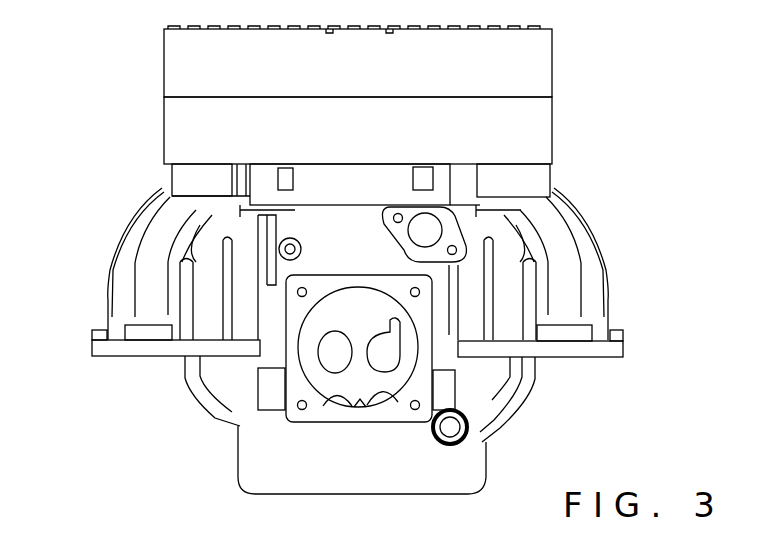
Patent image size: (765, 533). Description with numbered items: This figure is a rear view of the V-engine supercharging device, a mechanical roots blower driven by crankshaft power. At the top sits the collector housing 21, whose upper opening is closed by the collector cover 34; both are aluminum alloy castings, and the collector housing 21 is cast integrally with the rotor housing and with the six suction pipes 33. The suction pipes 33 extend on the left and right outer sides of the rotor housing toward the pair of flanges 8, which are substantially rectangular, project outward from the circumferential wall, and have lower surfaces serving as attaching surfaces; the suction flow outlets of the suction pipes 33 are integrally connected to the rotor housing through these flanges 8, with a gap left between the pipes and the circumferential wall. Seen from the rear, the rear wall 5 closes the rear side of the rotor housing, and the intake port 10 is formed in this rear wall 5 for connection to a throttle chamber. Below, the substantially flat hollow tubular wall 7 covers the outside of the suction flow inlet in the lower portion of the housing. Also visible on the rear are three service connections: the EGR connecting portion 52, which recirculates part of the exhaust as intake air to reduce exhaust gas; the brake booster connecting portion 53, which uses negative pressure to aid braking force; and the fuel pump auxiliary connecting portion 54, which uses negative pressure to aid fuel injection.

The rear wall 5 is at (495, 393).
The hollow tubular wall 7 is at (463, 477).
The flanges 8 is at (92, 344).
The intake port 10 is at (387, 393).
The collector housing 21 is at (541, 123).
The suction pipes 33 is at (113, 240).
The collector cover 34 is at (541, 61).
The EGR connecting portion 52 is at (428, 222).
The brake booster connecting portion 53 is at (463, 438).
The fuel pump auxiliary connecting portion 54 is at (302, 249).